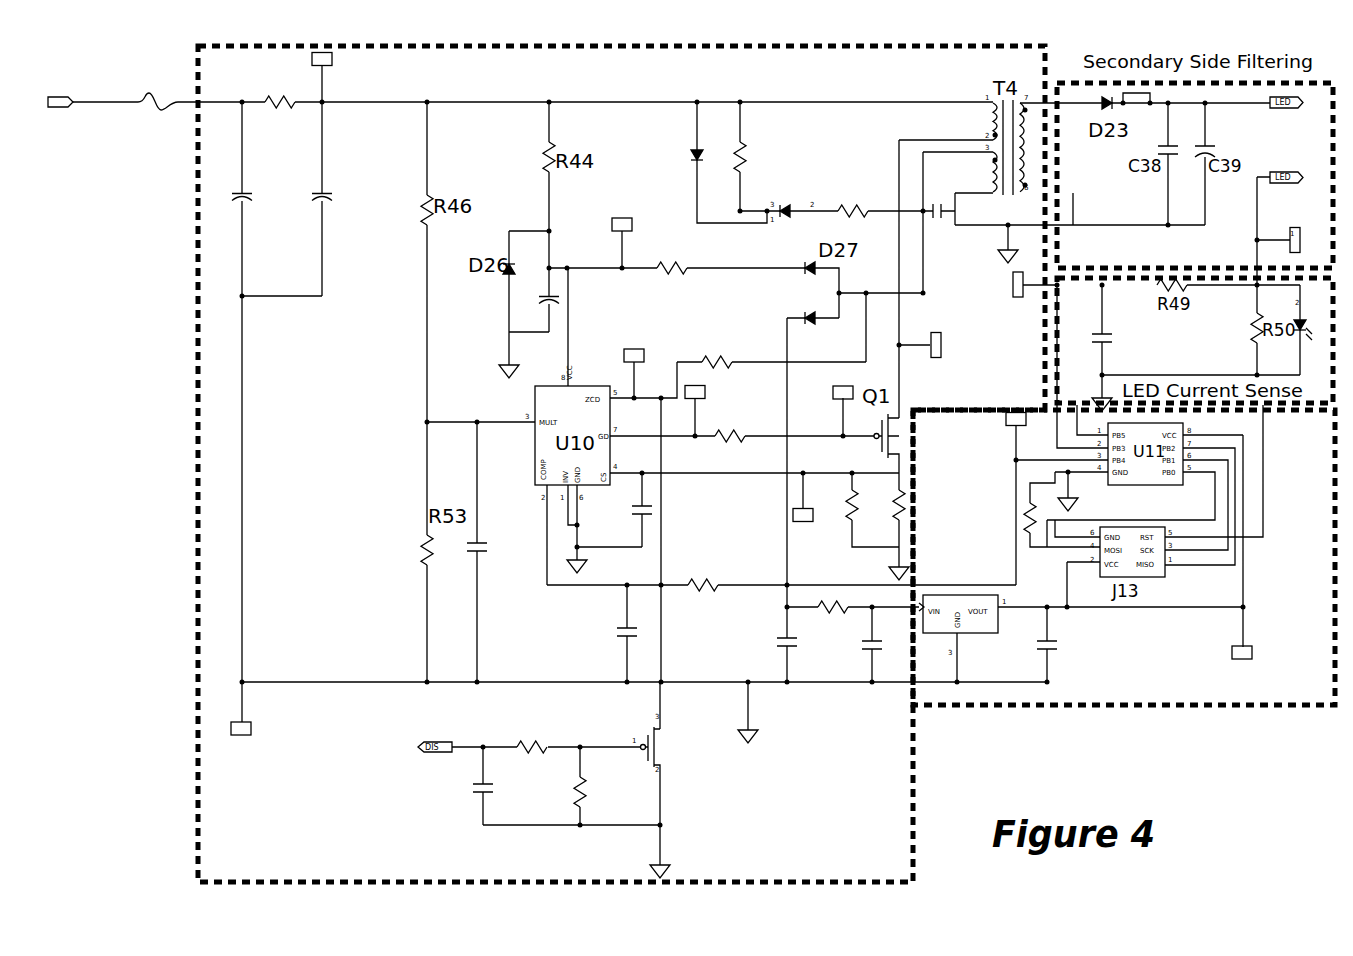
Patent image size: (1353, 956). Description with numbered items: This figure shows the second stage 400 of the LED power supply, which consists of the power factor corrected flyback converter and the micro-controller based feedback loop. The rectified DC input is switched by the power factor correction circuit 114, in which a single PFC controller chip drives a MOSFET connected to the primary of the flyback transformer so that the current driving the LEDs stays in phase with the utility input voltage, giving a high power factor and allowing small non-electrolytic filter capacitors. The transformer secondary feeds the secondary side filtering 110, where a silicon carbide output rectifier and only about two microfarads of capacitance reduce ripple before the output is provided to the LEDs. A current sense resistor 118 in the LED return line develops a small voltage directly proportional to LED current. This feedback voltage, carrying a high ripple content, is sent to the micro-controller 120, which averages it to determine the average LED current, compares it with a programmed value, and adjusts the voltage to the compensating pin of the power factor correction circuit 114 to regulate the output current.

The second stage 400 is at (156, 419).
The secondary side filtering 110 is at (1040, 260).
The power factor correction circuit 114 is at (917, 766).
The current sense resistor 118 is at (1043, 412).
The micro-controller 120 is at (1175, 707).